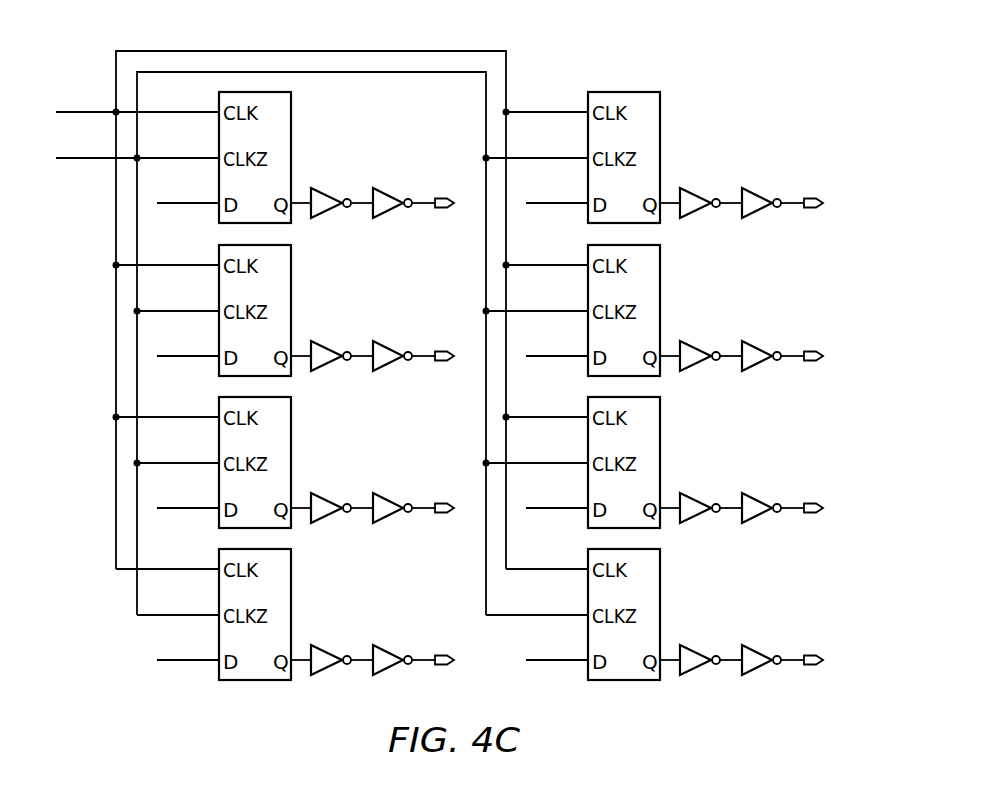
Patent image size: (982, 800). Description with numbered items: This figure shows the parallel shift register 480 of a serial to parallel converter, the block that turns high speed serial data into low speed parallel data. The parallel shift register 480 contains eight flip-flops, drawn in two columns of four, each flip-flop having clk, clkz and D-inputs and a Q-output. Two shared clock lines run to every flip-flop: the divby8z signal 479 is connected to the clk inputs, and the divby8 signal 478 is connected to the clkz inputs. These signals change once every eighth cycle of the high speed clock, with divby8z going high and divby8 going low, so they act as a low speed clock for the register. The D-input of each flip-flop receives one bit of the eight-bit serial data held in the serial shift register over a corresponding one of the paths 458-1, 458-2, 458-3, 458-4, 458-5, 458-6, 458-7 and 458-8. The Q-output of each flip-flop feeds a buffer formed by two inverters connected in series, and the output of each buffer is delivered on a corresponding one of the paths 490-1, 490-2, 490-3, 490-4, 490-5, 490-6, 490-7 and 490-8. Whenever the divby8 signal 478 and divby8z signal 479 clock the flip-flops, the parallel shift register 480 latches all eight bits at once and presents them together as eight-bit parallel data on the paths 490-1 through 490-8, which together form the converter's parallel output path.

The parallel shift register 480 is at (685, 60).
The divby8z signal 479 is at (85, 112).
The divby8 signal 478 is at (85, 158).
The path 458-1 is at (187, 204).
The path 458-2 is at (187, 357).
The path 458-3 is at (187, 509).
The path 458-4 is at (187, 661).
The path 458-5 is at (557, 204).
The path 458-6 is at (557, 357).
The path 458-7 is at (557, 509).
The path 458-8 is at (557, 661).
The path 490-1 is at (427, 201).
The path 490-2 is at (427, 354).
The path 490-3 is at (424, 510).
The path 490-4 is at (424, 662).
The path 490-5 is at (796, 201).
The path 490-6 is at (796, 354).
The path 490-7 is at (793, 510).
The path 490-8 is at (793, 662).